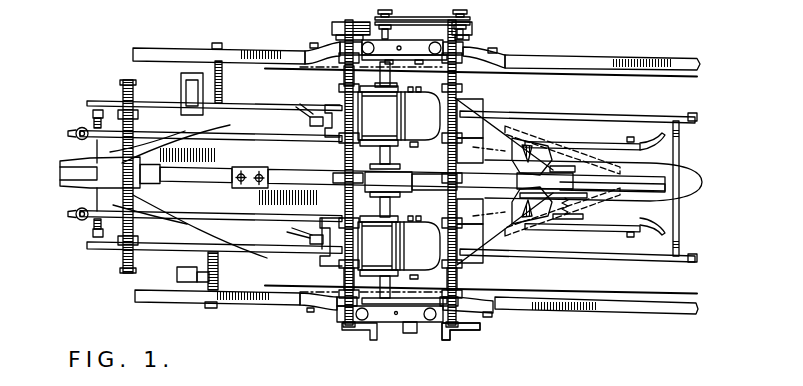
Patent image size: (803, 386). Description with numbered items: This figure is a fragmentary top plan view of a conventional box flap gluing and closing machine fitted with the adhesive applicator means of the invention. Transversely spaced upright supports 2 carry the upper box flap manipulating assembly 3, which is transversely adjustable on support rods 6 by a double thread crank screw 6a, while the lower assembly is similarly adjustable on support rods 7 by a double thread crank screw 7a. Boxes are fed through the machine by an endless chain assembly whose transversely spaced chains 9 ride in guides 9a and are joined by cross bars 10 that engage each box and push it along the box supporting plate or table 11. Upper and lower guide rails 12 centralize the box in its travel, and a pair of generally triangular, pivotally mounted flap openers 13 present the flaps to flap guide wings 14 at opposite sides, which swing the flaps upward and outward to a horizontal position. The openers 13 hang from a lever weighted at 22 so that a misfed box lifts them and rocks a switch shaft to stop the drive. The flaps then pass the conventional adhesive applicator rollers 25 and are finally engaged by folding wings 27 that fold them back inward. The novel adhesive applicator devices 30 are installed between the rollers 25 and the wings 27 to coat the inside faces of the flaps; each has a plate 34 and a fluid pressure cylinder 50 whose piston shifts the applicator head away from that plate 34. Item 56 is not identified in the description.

The upright supports 2 is at (458, 51).
The upper box flap manipulating assembly 3 is at (567, 236).
The support rods 6 is at (345, 72).
The double thread crank screw 6a is at (345, 282).
The support rods 7 is at (392, 220).
The double thread crank screw 7a is at (470, 342).
The chains 9 is at (693, 117).
The guides 9a is at (656, 118).
The cross bars 10 is at (674, 236).
The box supporting plate or table 11 is at (688, 188).
The guide rails 12 is at (596, 148).
The flap openers 13 is at (547, 148).
The flap guide wings 14 is at (494, 133).
The weight 22 is at (444, 182).
The adhesive applicator rollers 25 is at (398, 128).
The folding wings 27 is at (135, 163).
The adhesive applicator devices 30 is at (310, 114).
The plate 34 is at (290, 131).
The cylinder 50 is at (310, 240).
The collar 56 is at (452, 276).